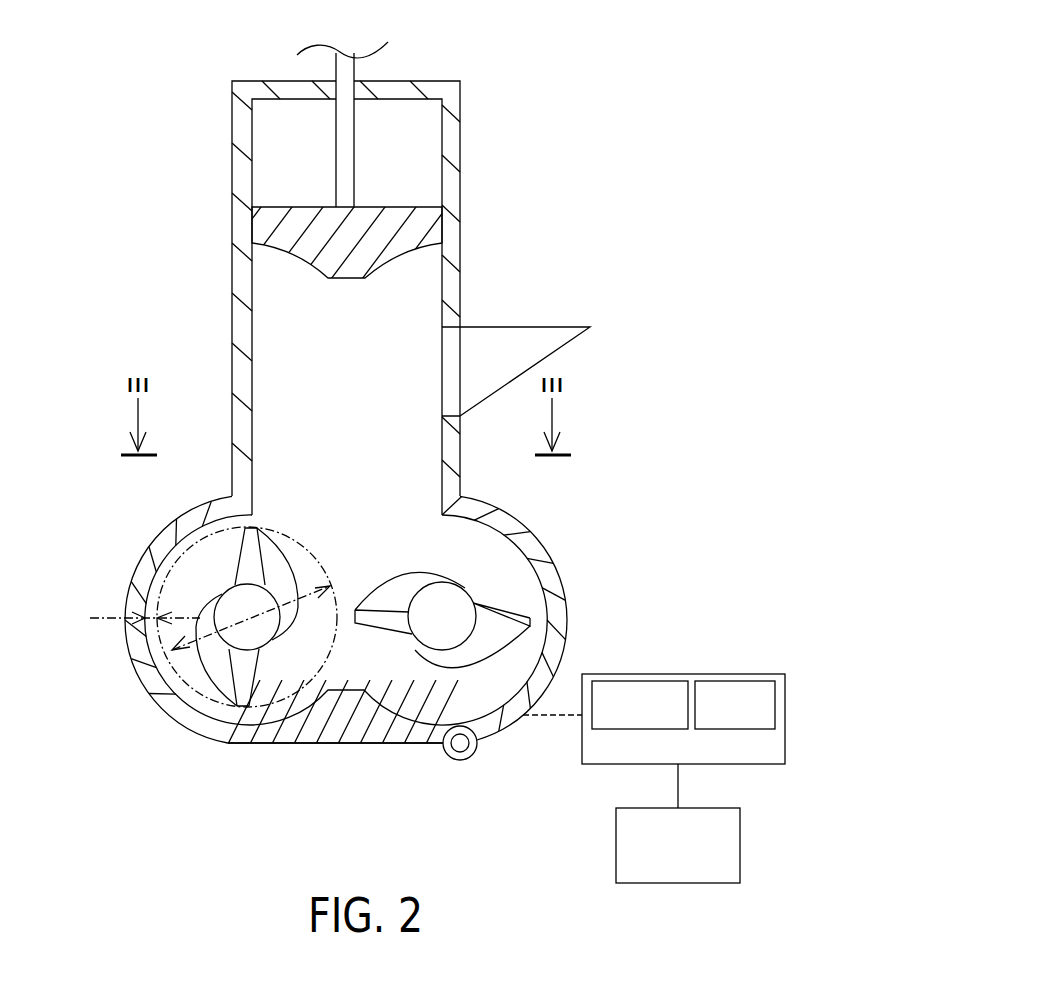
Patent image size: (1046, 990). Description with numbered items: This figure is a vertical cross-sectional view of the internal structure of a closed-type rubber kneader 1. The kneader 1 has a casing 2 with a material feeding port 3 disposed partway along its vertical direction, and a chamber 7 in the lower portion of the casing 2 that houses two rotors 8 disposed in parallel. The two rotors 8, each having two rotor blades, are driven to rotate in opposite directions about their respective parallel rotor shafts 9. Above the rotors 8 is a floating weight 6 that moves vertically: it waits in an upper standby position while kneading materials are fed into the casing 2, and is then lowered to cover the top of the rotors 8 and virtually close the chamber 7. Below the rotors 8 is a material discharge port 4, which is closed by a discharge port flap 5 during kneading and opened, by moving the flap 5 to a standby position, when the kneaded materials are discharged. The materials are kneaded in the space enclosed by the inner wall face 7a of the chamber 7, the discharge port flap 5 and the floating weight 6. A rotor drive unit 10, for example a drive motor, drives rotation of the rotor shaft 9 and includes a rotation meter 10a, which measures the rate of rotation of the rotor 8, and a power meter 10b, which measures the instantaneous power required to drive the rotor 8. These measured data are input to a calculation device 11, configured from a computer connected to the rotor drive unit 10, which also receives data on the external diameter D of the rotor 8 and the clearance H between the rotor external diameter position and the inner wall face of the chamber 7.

The closed-type rubber kneader 1 is at (480, 168).
The casing 2 is at (238, 380).
The material feeding port 3 is at (514, 327).
The material discharge port 4 is at (256, 748).
The discharge port flap 5 is at (316, 738).
The floating weight 6 is at (372, 212).
The chamber 7 is at (505, 558).
The inner wall face 7a is at (178, 548).
The rotor 8 is at (205, 653).
The rotor shaft 9 is at (270, 635).
The rotor drive unit 10 is at (680, 672).
The rotation meter 10a is at (635, 681).
The power meter 10b is at (735, 681).
The calculation device 11 is at (685, 884).
The external diameter of the rotor D is at (251, 618).
The clearance H is at (145, 612).